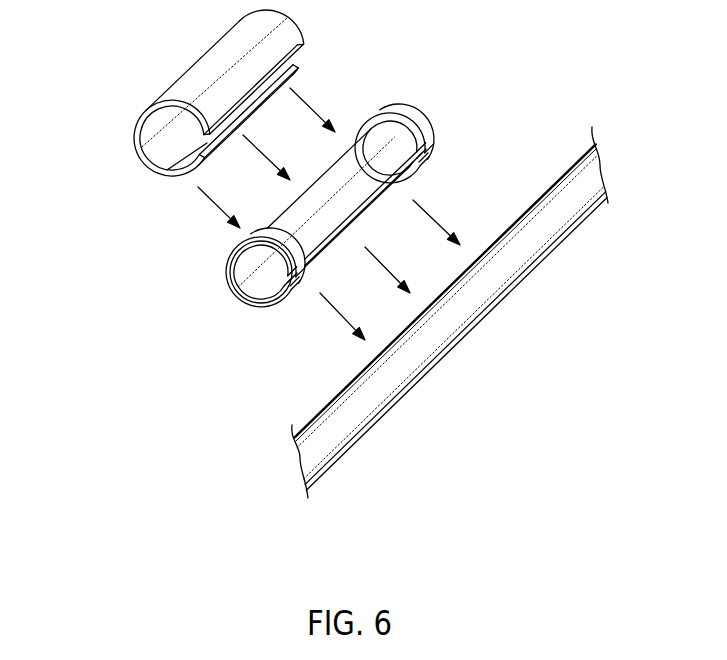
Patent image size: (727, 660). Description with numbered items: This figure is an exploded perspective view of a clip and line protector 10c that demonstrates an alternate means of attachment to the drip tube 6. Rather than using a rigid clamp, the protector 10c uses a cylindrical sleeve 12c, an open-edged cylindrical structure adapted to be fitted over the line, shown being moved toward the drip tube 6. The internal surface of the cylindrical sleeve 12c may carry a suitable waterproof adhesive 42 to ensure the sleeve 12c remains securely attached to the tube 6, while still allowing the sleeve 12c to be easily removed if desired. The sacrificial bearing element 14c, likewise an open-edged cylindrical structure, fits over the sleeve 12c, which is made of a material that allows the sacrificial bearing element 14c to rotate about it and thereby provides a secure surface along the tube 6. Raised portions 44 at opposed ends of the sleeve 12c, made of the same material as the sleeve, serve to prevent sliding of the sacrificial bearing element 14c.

The clip and line protector 10c is at (176, 93).
The sacrificial bearing element 14c is at (128, 124).
The cylindrical sleeve 12c is at (311, 184).
The raised portions 44 is at (252, 235).
The waterproof adhesive 42 is at (255, 287).
The drip tube 6 is at (497, 271).